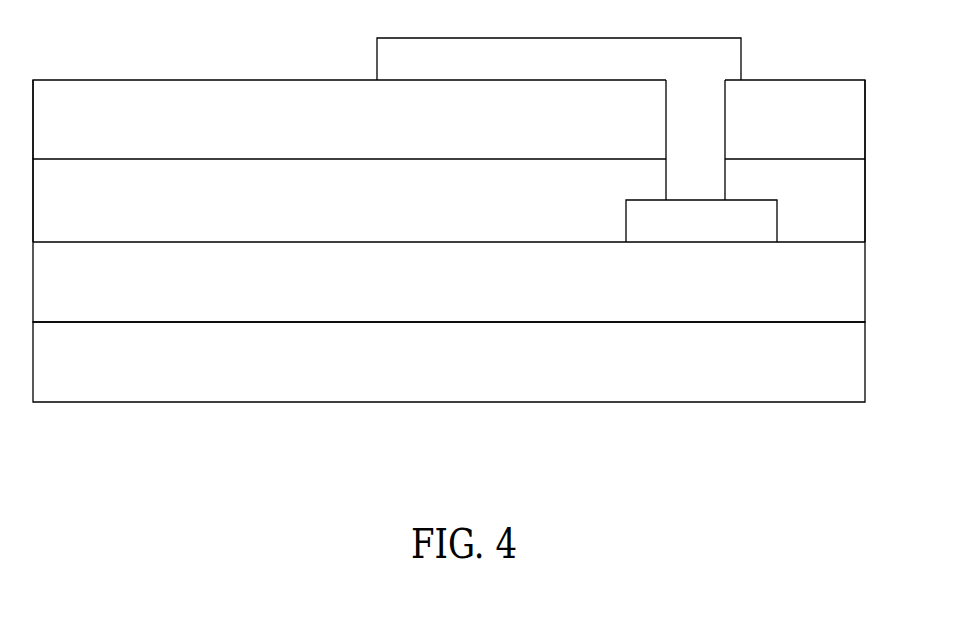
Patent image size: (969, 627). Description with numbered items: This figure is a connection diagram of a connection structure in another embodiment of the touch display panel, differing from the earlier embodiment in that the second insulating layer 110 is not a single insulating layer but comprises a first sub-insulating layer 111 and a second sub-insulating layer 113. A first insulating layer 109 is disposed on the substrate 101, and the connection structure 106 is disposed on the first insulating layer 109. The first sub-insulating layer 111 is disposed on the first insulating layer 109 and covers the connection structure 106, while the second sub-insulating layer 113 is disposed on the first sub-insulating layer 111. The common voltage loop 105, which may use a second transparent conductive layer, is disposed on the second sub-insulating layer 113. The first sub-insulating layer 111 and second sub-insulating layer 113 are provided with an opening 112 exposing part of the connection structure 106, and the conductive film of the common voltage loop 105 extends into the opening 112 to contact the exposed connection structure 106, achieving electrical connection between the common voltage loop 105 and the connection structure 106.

The substrate 101 is at (449, 362).
The first insulating layer 109 is at (449, 282).
The first sub-insulating layer 111 is at (449, 200).
The second sub-insulating layer 113 is at (449, 119).
The second insulating layer 110 is at (101, 425).
The common voltage loop 105 is at (559, 59).
The connection structure 106 is at (701, 221).
The opening 112 is at (727, 122).